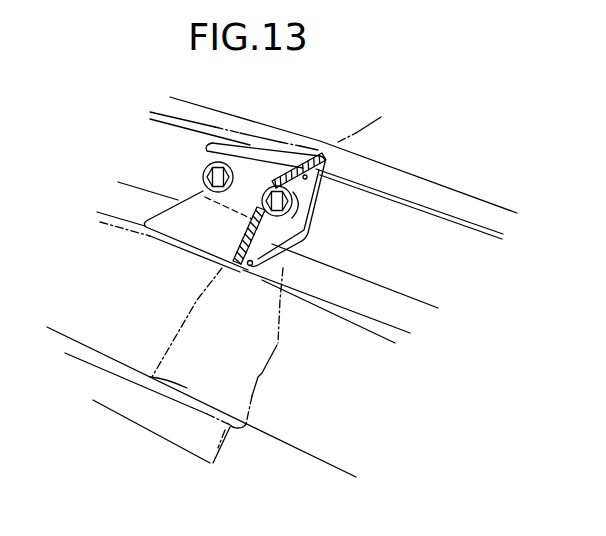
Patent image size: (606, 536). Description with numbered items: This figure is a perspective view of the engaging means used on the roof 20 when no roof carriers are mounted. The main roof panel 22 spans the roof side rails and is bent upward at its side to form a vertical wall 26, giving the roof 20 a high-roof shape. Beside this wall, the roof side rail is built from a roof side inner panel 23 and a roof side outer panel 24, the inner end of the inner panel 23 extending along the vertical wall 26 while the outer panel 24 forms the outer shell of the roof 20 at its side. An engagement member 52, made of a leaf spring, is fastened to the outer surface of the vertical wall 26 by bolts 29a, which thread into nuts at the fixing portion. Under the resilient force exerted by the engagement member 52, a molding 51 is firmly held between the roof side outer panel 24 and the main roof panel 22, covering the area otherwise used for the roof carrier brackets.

The roof 20 is at (362, 120).
The main roof panel 22 is at (299, 268).
The roof side inner panel 23 is at (278, 343).
The roof side outer panel 24 is at (185, 316).
The vertical wall 26 is at (207, 149).
The bolt 29a is at (212, 178).
The molding 51 is at (287, 254).
The engagement member 52 is at (300, 214).